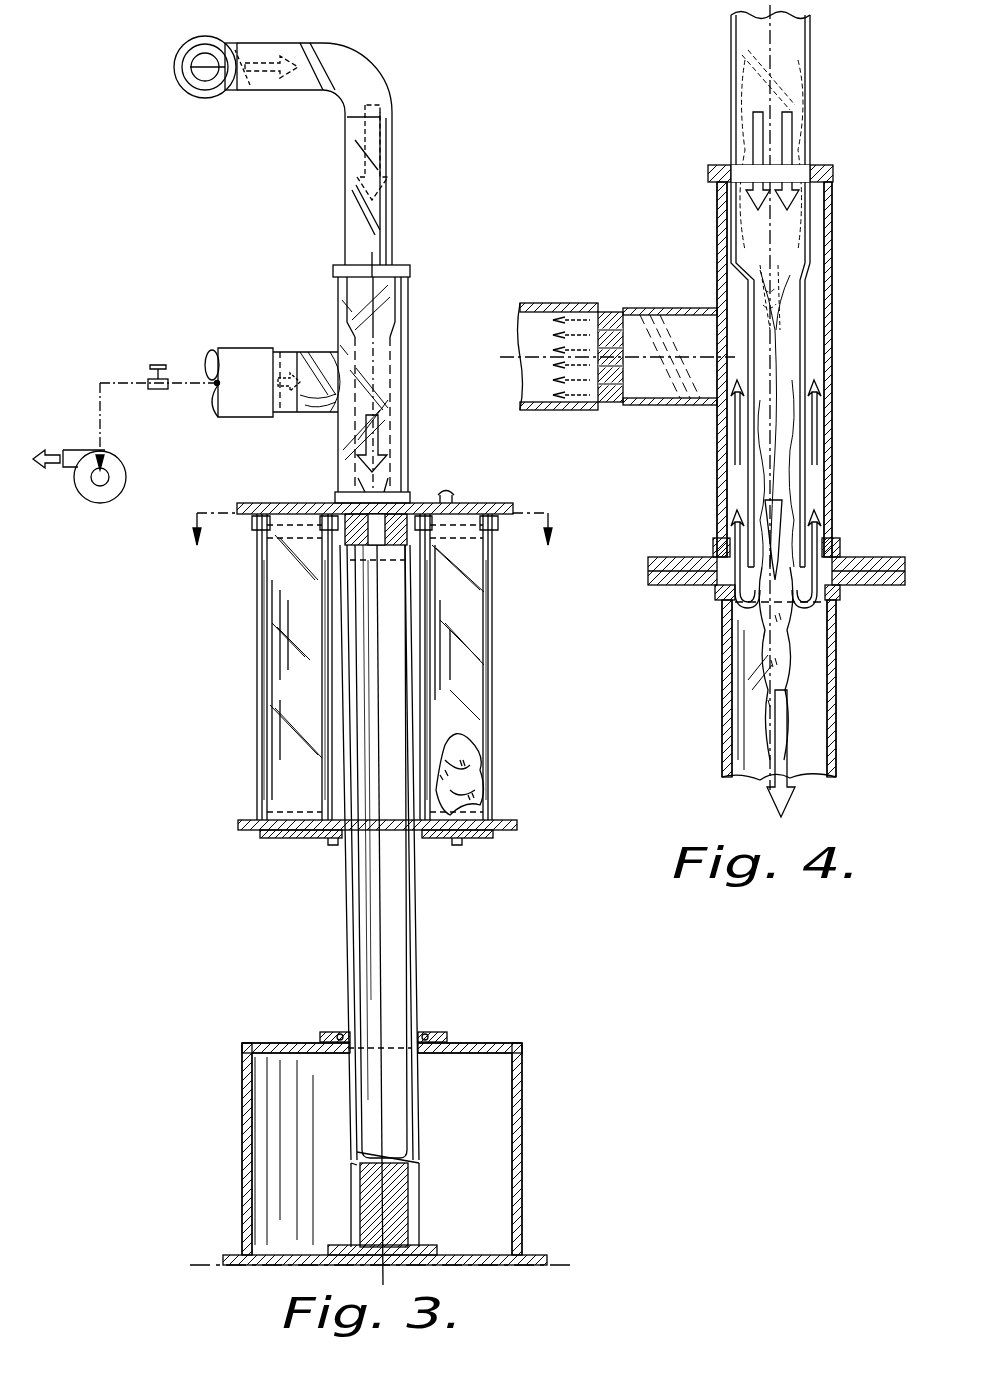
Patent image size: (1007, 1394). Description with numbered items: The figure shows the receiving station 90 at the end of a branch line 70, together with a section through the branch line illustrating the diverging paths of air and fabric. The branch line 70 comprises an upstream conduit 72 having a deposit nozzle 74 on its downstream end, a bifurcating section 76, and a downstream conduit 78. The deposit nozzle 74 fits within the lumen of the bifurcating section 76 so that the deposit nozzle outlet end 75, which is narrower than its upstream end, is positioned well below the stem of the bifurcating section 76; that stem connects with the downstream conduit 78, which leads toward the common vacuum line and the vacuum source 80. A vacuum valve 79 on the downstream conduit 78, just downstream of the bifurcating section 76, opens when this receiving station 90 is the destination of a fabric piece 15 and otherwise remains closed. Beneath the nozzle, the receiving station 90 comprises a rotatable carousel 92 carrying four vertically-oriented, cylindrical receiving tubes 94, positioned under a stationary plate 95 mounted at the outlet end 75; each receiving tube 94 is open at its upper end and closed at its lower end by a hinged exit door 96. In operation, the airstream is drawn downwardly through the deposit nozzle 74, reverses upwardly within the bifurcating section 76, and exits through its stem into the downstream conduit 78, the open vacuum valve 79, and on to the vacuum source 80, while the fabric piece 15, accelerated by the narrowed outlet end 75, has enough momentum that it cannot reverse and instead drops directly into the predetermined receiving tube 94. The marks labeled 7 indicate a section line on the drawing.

In FIG. 3, the branch line 70 is at (397, 45).
In FIG. 3, the upstream conduit 72 is at (392, 135).
In FIG. 4, the upstream conduit 72 is at (808, 98).
In FIG. 3, the deposit nozzle 74 is at (395, 345).
In FIG. 4, the deposit nozzle 74 is at (802, 245).
In FIG. 3, the deposit nozzle outlet end 75 is at (400, 492).
In FIG. 4, the deposit nozzle outlet end 75 is at (790, 530).
In FIG. 3, the bifurcating section 76 is at (412, 276).
In FIG. 4, the bifurcating section 76 is at (833, 298).
In FIG. 3, the downstream conduit 78 is at (250, 357).
In FIG. 4, the downstream conduit 78 is at (560, 302).
In FIG. 3, the vacuum valve 79 is at (158, 367).
In FIG. 3, the vacuum source 80 is at (113, 495).
In FIG. 3, the receiving station 90 is at (228, 628).
In FIG. 3, the rotatable carousel 92 is at (514, 637).
In FIG. 3, the receiving tube 94 is at (275, 695).
In FIG. 3, the stationary plate 95 is at (505, 503).
In FIG. 3, the exit door 96 is at (480, 838).
In FIG. 3, the fabric piece 15 is at (482, 757).
In FIG. 4, the fabric piece 15 is at (780, 658).
In FIG. 3, the section line 7- 7 is at (371, 514).